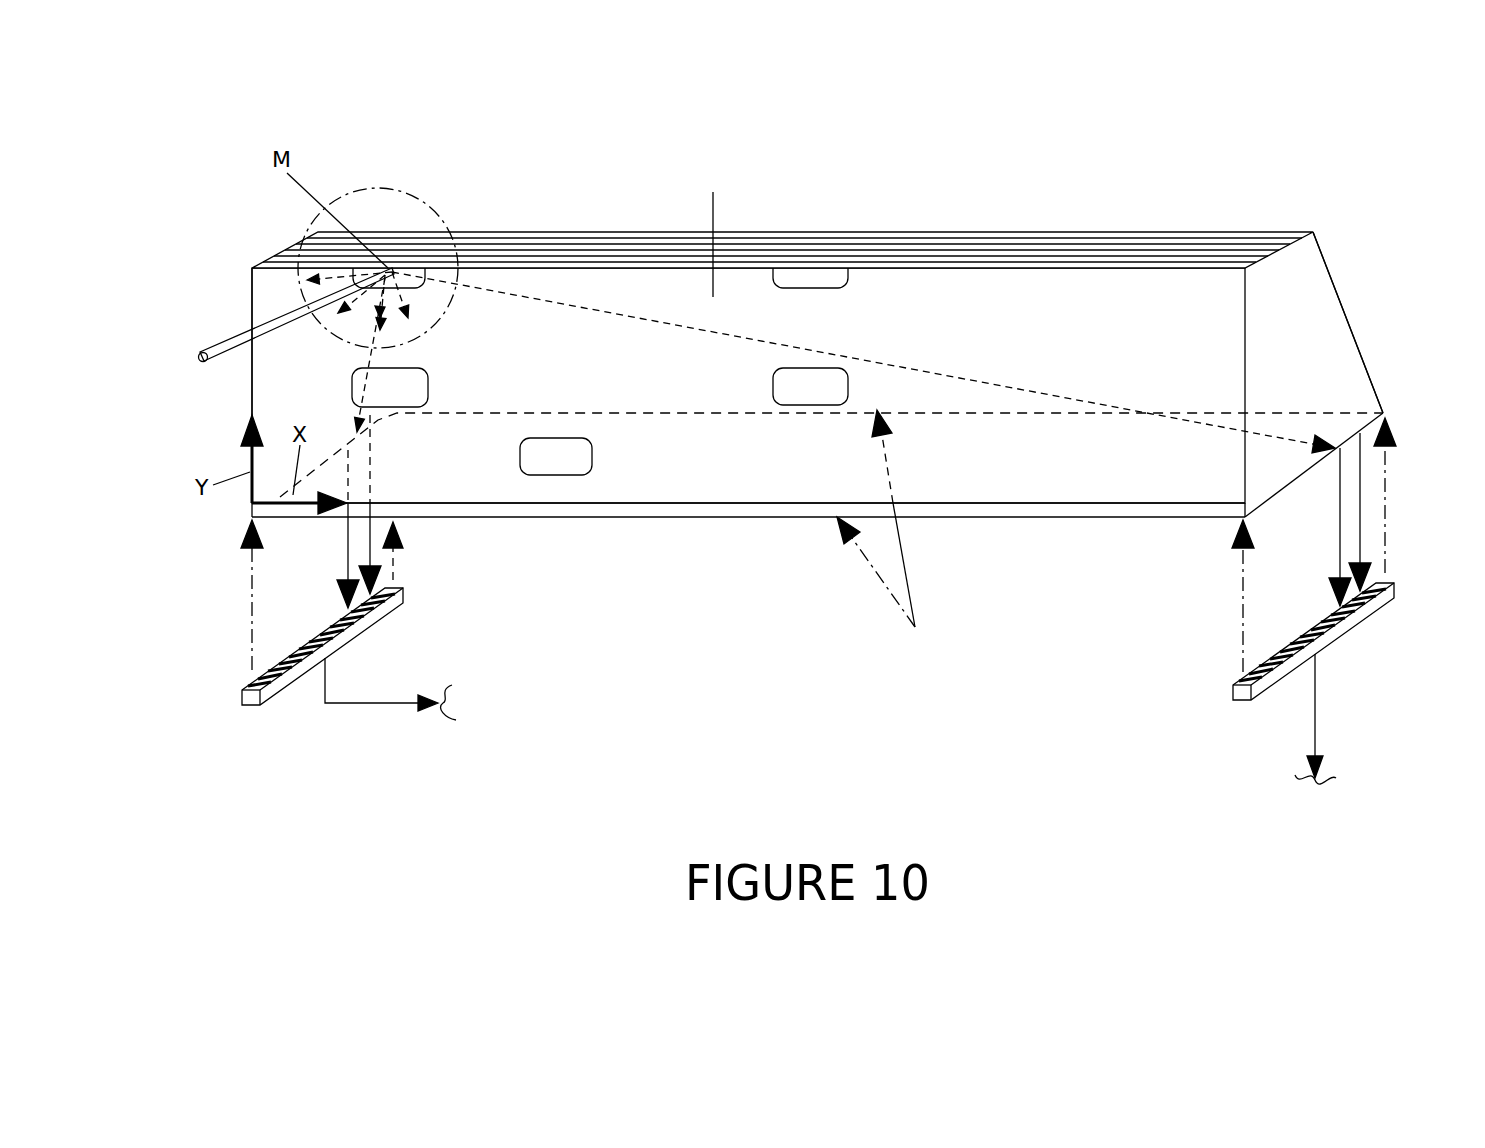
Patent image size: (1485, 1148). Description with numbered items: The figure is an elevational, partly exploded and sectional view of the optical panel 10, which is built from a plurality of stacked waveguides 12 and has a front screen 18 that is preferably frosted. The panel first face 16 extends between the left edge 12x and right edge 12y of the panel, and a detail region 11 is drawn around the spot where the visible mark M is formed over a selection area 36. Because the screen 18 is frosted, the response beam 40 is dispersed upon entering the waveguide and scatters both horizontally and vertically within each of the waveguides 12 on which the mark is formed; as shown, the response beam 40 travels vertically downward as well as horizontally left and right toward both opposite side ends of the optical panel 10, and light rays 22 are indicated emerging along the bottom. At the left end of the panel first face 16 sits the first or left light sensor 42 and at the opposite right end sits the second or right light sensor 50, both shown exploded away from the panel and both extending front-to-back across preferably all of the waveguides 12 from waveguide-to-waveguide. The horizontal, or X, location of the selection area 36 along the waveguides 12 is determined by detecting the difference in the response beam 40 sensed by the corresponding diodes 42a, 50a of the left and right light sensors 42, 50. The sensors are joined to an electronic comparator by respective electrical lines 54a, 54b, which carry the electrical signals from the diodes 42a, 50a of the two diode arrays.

The optical panel 10 is at (1225, 220).
The detail region around stylus tip 11 is at (413, 192).
The waveguides 12 is at (885, 250).
The left edge of display 12x is at (250, 395).
The right edge of display 12y is at (1352, 387).
The panel first face 16 is at (705, 528).
The screen 18 is at (716, 230).
The light beams 22 is at (907, 575).
The selection area 36 is at (418, 288).
The response beam 40 is at (228, 340).
The first light sensor 42 is at (371, 645).
The diodes of first light sensor 42a is at (315, 638).
The second light sensor 50 is at (1324, 641).
The diodes of second light sensor 50a is at (1305, 635).
The electrical line 54a is at (373, 703).
The electrical line 54b is at (1318, 728).